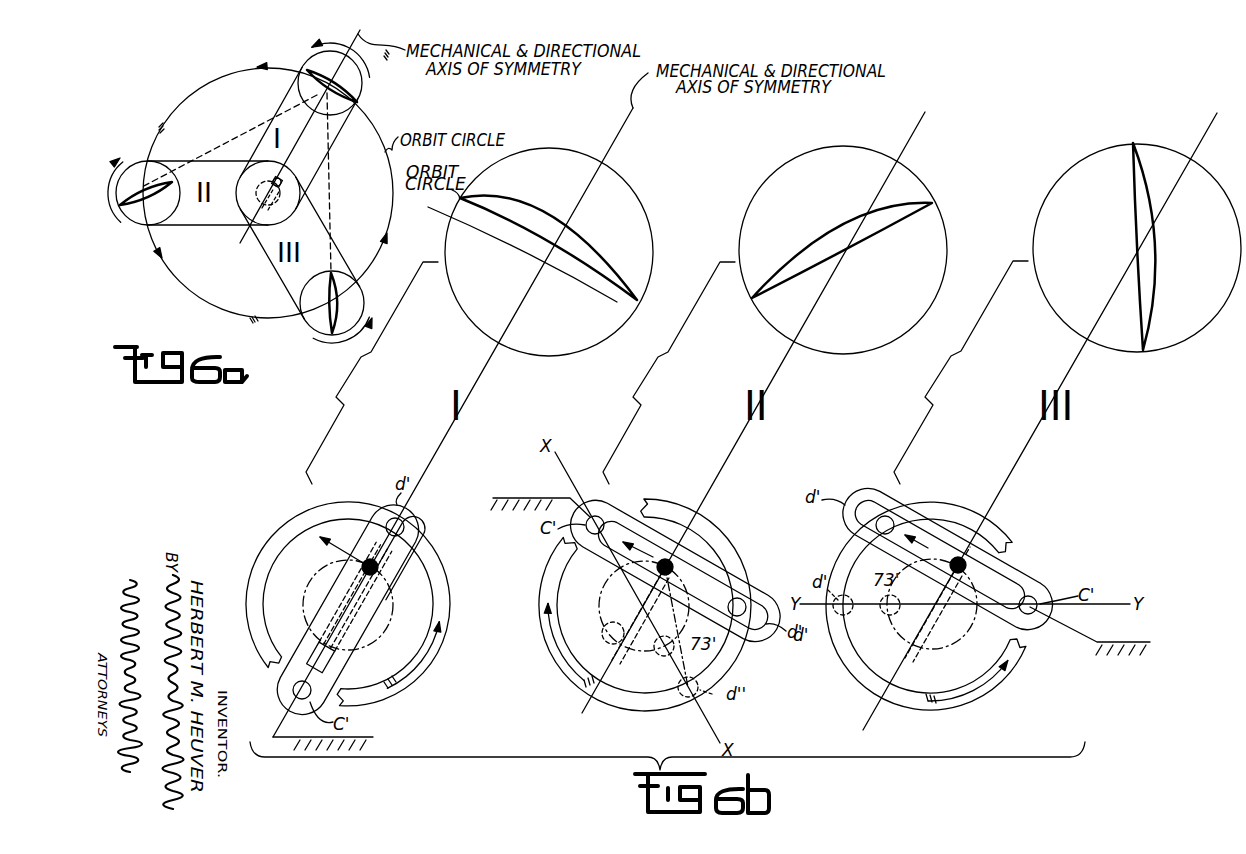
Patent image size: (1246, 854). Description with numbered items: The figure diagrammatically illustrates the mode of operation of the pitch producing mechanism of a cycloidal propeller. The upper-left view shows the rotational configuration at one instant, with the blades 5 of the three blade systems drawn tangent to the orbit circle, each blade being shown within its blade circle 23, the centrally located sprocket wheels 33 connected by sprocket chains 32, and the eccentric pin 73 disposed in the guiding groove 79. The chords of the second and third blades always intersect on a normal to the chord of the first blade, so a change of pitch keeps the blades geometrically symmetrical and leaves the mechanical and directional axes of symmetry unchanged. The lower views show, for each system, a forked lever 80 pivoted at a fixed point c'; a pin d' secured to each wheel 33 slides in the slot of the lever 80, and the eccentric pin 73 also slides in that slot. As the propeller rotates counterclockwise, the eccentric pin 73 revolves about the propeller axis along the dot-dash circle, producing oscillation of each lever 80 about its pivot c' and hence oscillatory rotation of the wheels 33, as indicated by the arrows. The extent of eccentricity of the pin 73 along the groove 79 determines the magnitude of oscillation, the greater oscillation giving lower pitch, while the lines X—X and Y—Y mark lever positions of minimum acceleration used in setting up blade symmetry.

In FIG. 6A, the blades 5 is at (310, 72).
In FIG. 6B, the blades 5 is at (578, 247).
In FIG. 6A, the blade circle 23 is at (363, 92).
In FIG. 6B, the blade circle 23 is at (651, 225).
In FIG. 6A, the sprocket chains 32 is at (331, 145).
In FIG. 6A, the sprocket wheels 33 is at (289, 216).
In FIG. 6B, the sprocket wheels 33 is at (451, 607).
In FIG. 6A, the eccentric pin 73 is at (281, 179).
In FIG. 6B, the eccentric pin 73 is at (378, 565).
In FIG. 6A, the guiding groove 79 is at (258, 200).
In FIG. 6B, the guiding groove 79 is at (310, 633).
In FIG. 6B, the forked lever 80 is at (333, 672).